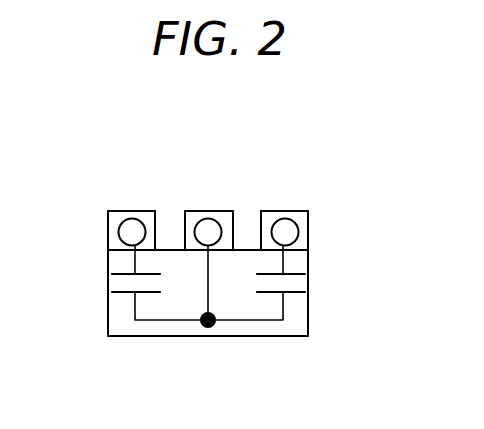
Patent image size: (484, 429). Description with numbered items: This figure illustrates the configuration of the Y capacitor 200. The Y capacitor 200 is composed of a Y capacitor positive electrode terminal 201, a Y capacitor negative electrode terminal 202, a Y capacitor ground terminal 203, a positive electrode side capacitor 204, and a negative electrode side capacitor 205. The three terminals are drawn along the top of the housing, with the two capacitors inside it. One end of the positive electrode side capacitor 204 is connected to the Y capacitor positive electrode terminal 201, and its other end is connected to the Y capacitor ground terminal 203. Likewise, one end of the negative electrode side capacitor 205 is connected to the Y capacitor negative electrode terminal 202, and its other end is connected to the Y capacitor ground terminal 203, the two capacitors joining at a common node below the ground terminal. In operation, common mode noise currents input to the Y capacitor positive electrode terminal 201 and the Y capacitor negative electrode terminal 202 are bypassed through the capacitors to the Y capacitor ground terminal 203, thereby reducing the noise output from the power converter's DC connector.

The Y capacitor 200 is at (328, 180).
The Y capacitor positive electrode terminal 201 is at (108, 228).
The Y capacitor negative electrode terminal 202 is at (308, 227).
The Y capacitor ground terminal 203 is at (207, 211).
The positive electrode side capacitor 204 is at (130, 293).
The negative electrode side capacitor 205 is at (290, 293).